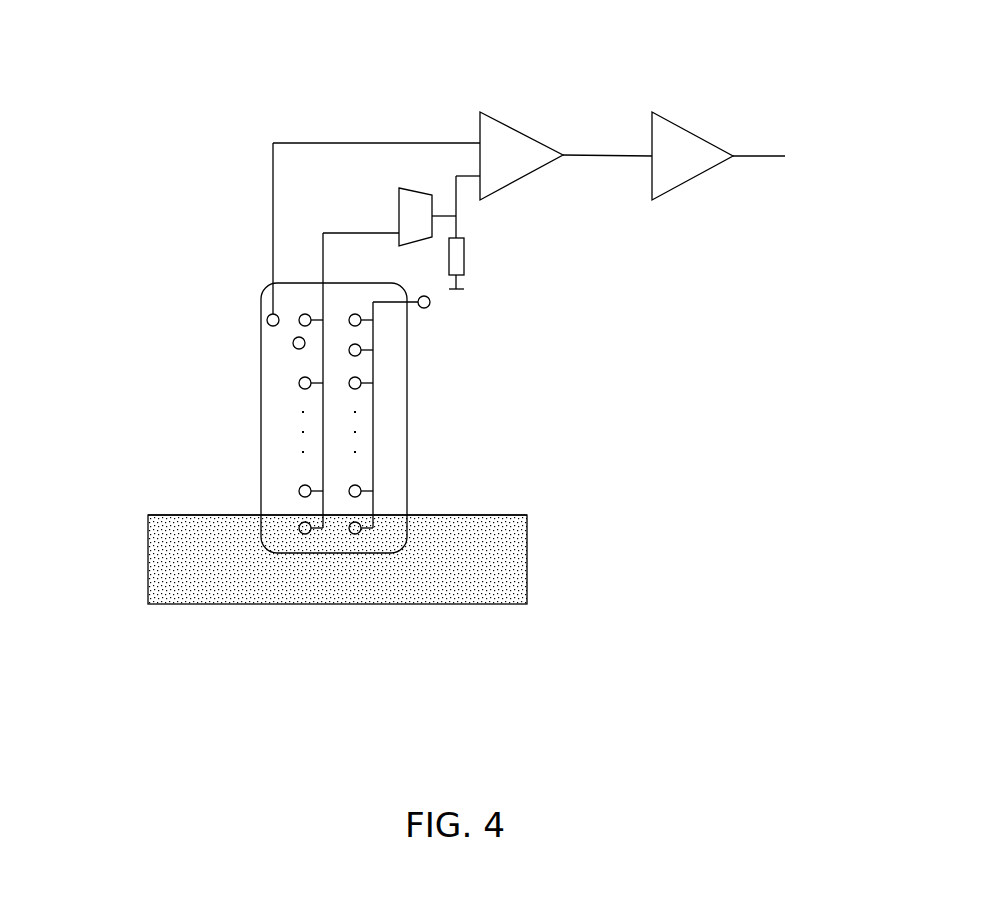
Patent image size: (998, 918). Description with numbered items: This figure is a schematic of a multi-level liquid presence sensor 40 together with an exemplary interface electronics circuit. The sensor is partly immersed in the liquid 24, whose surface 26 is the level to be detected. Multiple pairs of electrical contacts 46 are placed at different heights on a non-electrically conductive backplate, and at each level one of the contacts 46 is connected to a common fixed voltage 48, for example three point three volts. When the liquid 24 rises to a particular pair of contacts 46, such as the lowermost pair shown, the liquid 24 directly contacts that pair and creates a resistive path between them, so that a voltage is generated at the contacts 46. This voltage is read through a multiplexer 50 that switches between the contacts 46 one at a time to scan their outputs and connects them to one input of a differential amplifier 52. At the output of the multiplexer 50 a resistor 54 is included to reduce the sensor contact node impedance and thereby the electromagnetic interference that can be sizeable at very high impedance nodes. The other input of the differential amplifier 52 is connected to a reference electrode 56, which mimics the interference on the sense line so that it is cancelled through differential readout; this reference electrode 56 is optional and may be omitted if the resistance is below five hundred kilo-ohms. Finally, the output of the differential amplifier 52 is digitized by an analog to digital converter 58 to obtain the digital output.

The liquid 24 is at (434, 579).
The surface of the liquid 26 is at (173, 515).
The liquid presence sensor 40 is at (429, 470).
The electrical contacts 46 is at (263, 417).
The common fixed voltage 48 is at (444, 323).
The multiplexer 50 is at (384, 179).
The differential amplifier 52 is at (512, 100).
The resistor 54 is at (486, 268).
The reference electrode 56 is at (261, 306).
The analog to digital converter 58 is at (689, 101).